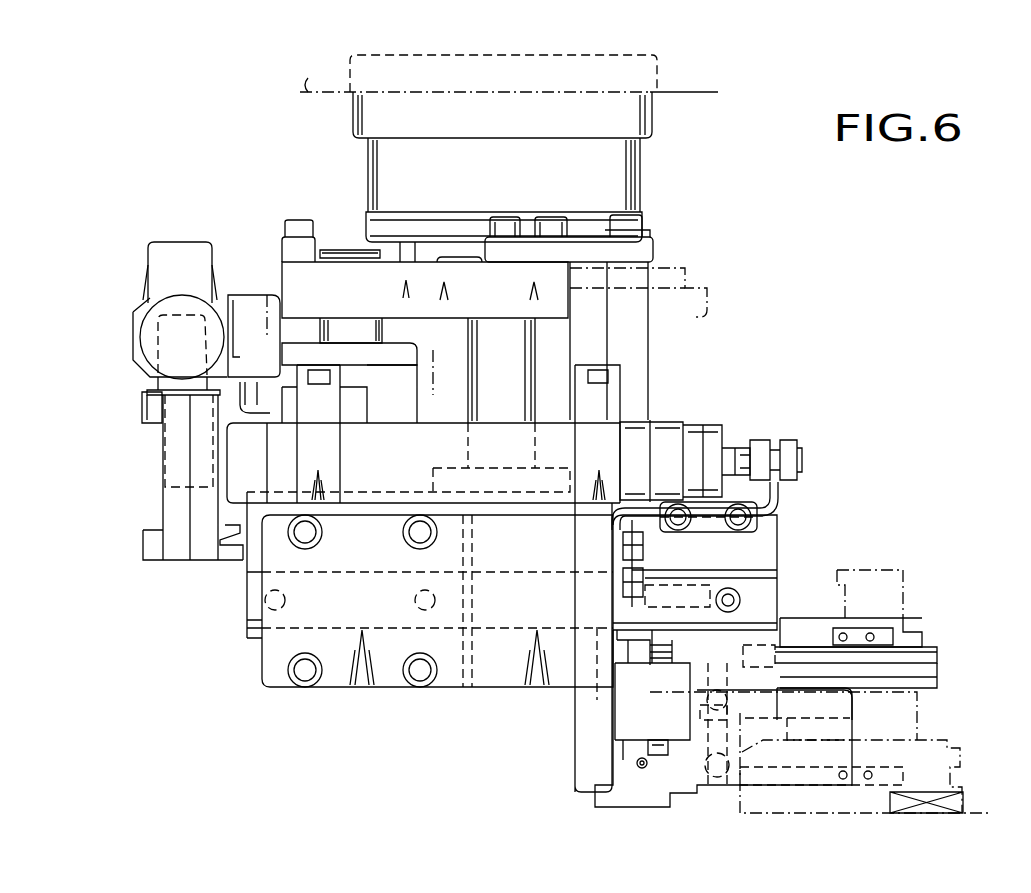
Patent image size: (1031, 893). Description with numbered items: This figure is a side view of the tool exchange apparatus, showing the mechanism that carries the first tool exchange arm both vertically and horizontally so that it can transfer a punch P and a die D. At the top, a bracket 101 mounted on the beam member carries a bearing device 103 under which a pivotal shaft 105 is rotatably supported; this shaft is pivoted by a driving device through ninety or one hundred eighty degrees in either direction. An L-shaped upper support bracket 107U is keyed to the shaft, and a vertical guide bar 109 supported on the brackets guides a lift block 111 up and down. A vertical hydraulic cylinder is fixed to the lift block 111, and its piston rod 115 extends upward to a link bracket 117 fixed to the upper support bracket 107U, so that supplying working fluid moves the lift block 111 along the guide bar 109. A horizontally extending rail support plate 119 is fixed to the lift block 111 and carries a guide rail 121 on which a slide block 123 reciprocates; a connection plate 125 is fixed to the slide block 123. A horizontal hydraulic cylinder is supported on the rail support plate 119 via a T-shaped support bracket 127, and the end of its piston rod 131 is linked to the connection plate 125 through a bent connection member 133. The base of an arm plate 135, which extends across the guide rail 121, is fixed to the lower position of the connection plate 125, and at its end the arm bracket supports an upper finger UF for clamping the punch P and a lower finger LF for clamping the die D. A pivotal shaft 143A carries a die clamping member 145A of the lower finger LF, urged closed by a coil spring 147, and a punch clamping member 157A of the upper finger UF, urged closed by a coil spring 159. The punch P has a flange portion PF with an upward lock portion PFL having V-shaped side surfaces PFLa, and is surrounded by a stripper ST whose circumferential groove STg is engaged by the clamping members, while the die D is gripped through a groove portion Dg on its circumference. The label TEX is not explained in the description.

The bracket 101 is at (718, 92).
The bearing device 103 is at (618, 177).
The pivotal shaft 105 is at (458, 245).
The upper support bracket 107U is at (408, 255).
The guide bar 109 is at (352, 330).
The lift block 111 is at (410, 409).
The piston rod 115 is at (642, 285).
The link bracket 117 is at (648, 246).
The rail support plate 119 is at (770, 549).
The guide rail 121 is at (768, 597).
The slide block 123 is at (203, 552).
The connection plate 125 is at (173, 552).
The T-shaped support bracket 127 is at (777, 528).
The piston rod 131 is at (737, 453).
The connection member 133 is at (155, 383).
The arm plate 135 is at (575, 748).
The pivotal shaft 143A is at (640, 660).
The die clamping member 145A is at (652, 775).
The coil spring 147 is at (726, 780).
The punch clamping member 157A is at (680, 675).
The coil spring 159 is at (707, 710).
The test head TEX is at (873, 310).
The upper finger UF is at (800, 621).
The V-shaped projection side surfaces PFLa is at (842, 570).
The lock portion PFL is at (900, 572).
The flange portion PF is at (912, 622).
The stripper ST is at (930, 652).
The circumferential groove STg is at (935, 683).
The punch P is at (905, 705).
The die D is at (947, 746).
The groove portion Dg is at (960, 776).
The lower finger LF is at (805, 790).